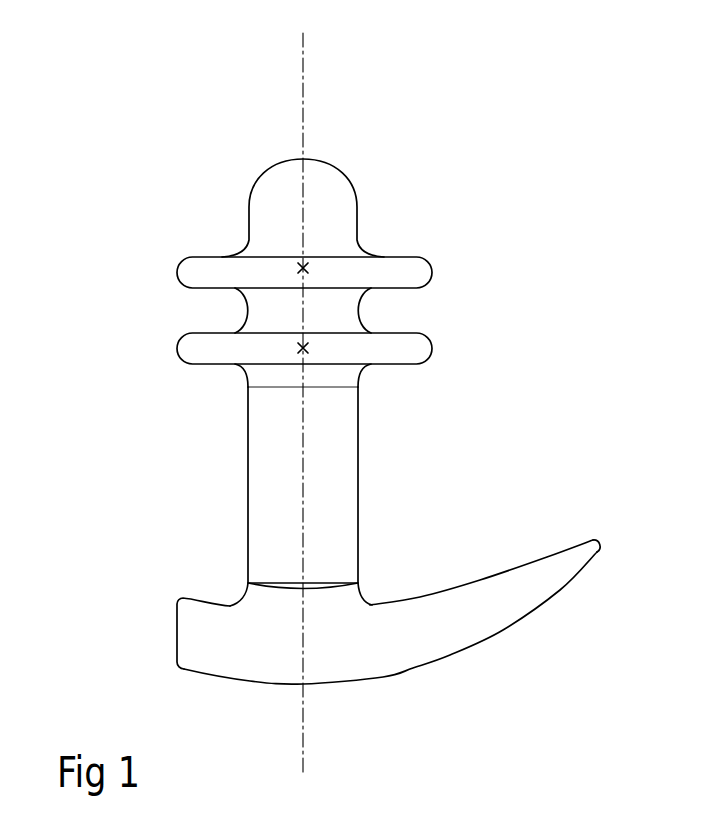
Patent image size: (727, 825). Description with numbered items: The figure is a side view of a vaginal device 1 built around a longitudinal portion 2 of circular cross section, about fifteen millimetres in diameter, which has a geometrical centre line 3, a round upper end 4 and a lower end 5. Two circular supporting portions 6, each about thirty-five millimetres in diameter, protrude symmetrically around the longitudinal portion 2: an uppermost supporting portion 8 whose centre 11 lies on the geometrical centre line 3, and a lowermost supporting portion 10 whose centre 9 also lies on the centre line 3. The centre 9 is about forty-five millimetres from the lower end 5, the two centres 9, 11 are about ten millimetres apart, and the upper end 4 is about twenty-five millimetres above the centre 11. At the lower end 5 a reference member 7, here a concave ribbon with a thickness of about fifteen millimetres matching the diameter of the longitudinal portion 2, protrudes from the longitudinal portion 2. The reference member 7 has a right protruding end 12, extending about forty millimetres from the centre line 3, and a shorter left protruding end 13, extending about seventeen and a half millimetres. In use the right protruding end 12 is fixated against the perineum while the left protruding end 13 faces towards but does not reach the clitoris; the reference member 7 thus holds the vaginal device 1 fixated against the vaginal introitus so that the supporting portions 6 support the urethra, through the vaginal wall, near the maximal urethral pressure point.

The vaginal device 1 is at (470, 258).
The longitudinal portion 2 is at (343, 480).
The geometrical centre line 3 is at (302, 90).
The upper end 4 is at (305, 158).
The lower end 5 is at (303, 683).
The supporting portion 6 is at (255, 307).
The reference member 7 is at (346, 650).
The uppermost supporting portion 8 is at (207, 268).
The centre of lowermost supporting portion 9 is at (303, 348).
The lowermost supporting portion 10 is at (212, 348).
The centre of uppermost supporting portion 11 is at (303, 268).
The right protruding end 12 is at (487, 615).
The left protruding end 13 is at (194, 630).